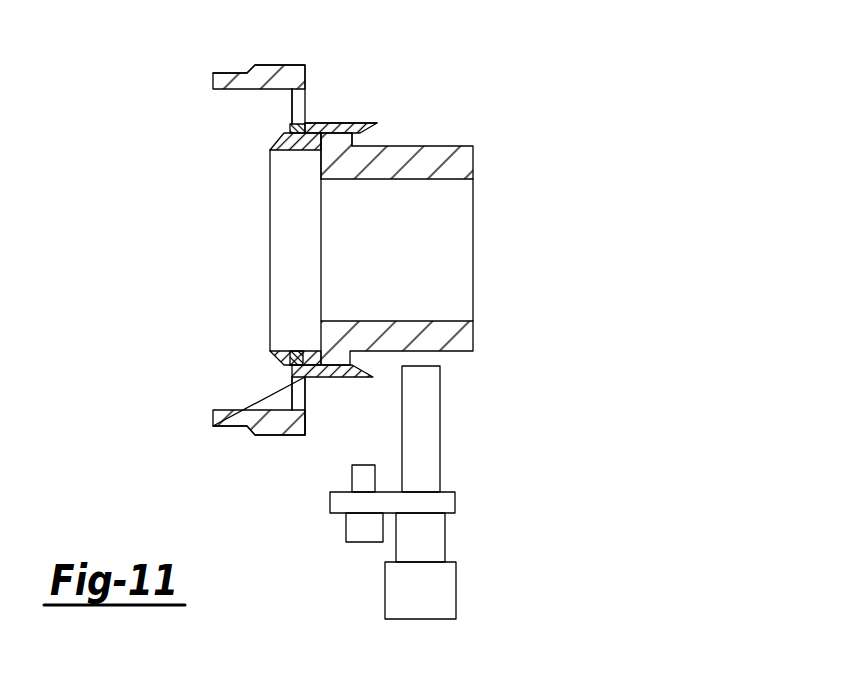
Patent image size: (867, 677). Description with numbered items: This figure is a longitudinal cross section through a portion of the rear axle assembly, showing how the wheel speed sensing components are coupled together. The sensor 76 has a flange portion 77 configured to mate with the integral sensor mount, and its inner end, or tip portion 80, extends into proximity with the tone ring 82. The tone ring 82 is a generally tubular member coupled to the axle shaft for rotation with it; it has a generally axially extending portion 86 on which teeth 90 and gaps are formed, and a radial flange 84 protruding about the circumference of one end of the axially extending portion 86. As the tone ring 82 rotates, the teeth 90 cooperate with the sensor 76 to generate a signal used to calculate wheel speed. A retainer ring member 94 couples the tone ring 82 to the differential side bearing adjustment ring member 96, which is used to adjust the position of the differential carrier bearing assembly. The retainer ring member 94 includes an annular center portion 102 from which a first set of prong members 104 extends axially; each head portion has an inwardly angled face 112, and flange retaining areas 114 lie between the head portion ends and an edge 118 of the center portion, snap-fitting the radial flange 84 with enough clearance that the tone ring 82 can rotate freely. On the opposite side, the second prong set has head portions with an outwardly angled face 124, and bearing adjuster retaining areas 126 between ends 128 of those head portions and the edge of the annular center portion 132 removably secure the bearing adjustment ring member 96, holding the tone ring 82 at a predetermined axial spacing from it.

The sensor 76 is at (481, 541).
The flange portion 77 is at (340, 502).
The tip portion 80 is at (457, 376).
The tone ring 82 is at (437, 236).
The radial flange 84 is at (340, 378).
The axially extending portion 86 is at (468, 161).
The teeth 90 is at (468, 340).
The retainer ring member 94 is at (370, 113).
The differential side bearing adjustment ring member 96 is at (232, 54).
The annular center portion 102 is at (306, 128).
The first set of prong members 104 is at (348, 124).
The inwardly angled face 112 is at (352, 140).
The flange retaining areas 114 is at (342, 138).
The edge of the annular center portion 118 is at (322, 151).
The outwardly angled face 124 is at (293, 376).
The bearing adjuster retaining areas 126 is at (296, 132).
The ends of the head portions 128 is at (292, 380).
The annular center portion 132 is at (305, 380).